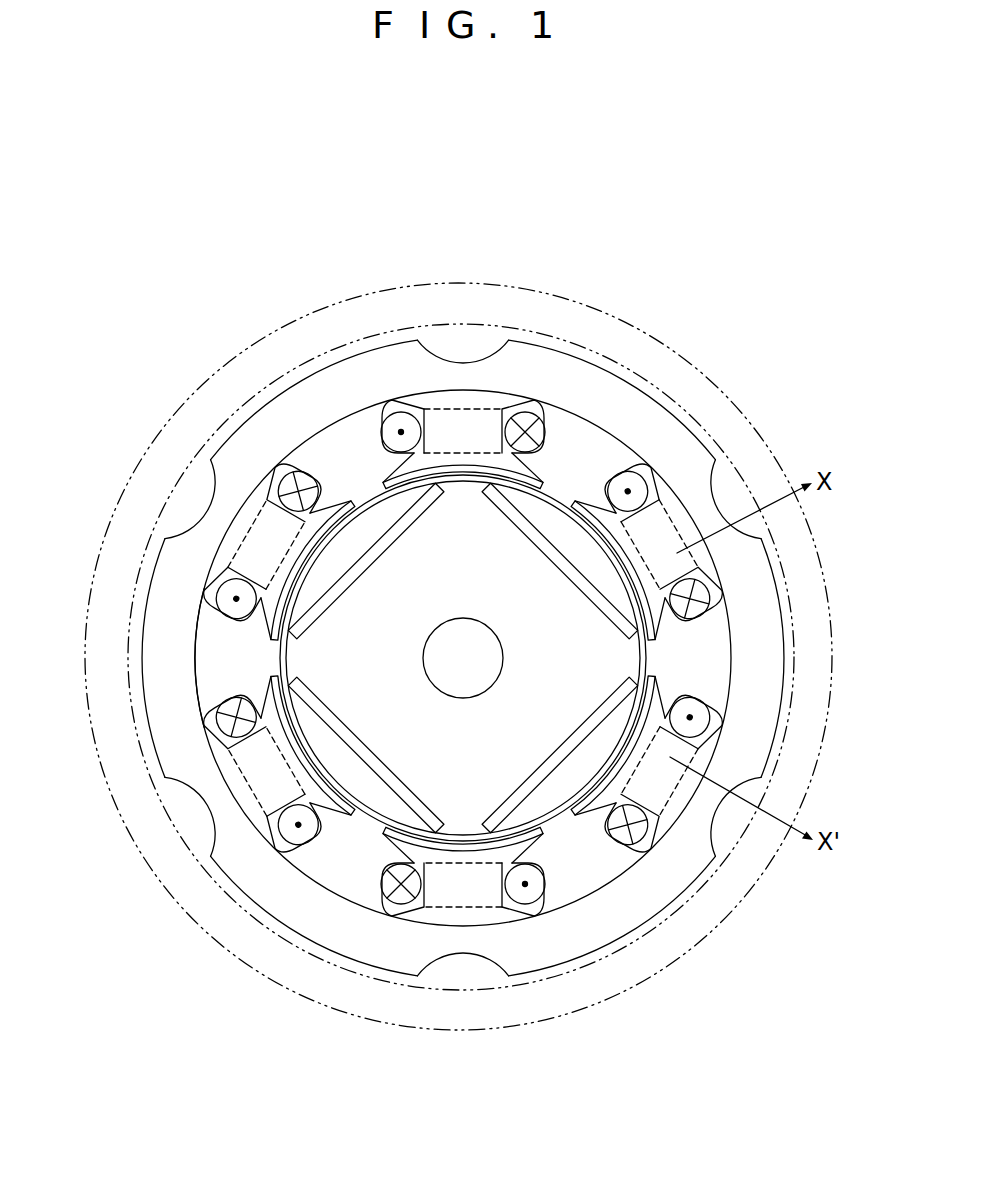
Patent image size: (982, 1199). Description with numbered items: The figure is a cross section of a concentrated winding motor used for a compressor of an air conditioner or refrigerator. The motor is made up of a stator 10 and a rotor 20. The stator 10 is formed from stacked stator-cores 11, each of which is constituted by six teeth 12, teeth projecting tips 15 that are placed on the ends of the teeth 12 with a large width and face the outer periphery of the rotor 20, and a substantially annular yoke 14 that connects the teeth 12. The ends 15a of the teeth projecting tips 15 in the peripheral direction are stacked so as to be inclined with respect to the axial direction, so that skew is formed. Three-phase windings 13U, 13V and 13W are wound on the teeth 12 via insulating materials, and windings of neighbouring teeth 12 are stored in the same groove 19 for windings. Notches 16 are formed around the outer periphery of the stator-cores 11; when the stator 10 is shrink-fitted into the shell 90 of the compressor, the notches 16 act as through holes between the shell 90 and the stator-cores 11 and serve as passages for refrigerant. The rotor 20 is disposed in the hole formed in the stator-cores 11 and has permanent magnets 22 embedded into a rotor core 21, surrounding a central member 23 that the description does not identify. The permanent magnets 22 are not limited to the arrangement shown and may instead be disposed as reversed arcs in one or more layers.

The stator 10 is at (790, 667).
The stator-core 11 is at (447, 658).
The teeth 12 is at (203, 520).
The U-phase winding 13U is at (712, 590).
The V-phase winding 13V is at (528, 408).
The W-phase winding 13W is at (278, 474).
The yoke 14 is at (447, 678).
The teeth projecting tips 15 is at (559, 555).
The ends of teeth projecting tips 15a is at (577, 478).
The notches 16 is at (768, 860).
The groove for windings 19 is at (218, 657).
The rotor 20 is at (556, 663).
The rotor core 21 is at (590, 653).
The permanent magnets 22 is at (392, 787).
The shaft 23 is at (442, 640).
The shell 90 is at (735, 420).